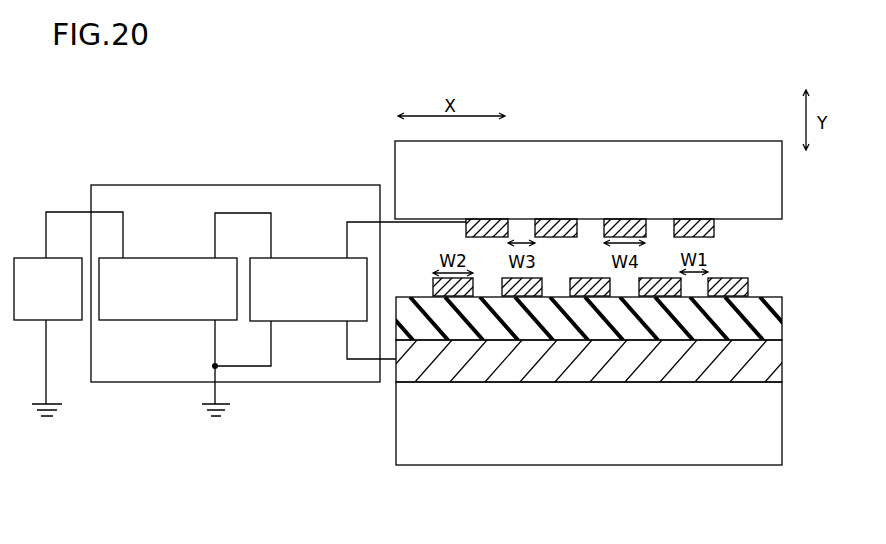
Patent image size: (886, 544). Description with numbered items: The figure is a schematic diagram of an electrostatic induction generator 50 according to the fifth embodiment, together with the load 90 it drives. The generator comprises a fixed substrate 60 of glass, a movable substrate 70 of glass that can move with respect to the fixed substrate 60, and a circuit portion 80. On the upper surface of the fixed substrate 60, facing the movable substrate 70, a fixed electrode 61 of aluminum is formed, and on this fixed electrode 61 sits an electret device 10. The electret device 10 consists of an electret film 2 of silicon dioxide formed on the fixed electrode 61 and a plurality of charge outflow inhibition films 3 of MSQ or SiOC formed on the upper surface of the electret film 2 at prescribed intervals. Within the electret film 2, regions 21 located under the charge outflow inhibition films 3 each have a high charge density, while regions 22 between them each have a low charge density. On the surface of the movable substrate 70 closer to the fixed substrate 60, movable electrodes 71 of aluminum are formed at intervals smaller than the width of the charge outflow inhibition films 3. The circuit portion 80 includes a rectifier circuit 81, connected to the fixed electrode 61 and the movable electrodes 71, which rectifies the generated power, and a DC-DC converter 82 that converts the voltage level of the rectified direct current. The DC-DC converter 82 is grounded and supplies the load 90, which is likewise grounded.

The electret film 2 is at (602, 318).
The charge outflow inhibition film 3 is at (730, 287).
The electret device 10 is at (624, 302).
The regions 21 is at (521, 320).
The regions 22 is at (559, 320).
The electrostatic induction generator 50 is at (577, 75).
The fixed substrate 60 is at (750, 417).
The fixed electrode 61 is at (750, 364).
The movable substrate 70 is at (748, 179).
The movable electrode 71 is at (710, 232).
The circuit portion 80 is at (279, 185).
The rectifier circuit 81 is at (303, 257).
The DC-DC converter 82 is at (168, 257).
The load 90 is at (32, 257).